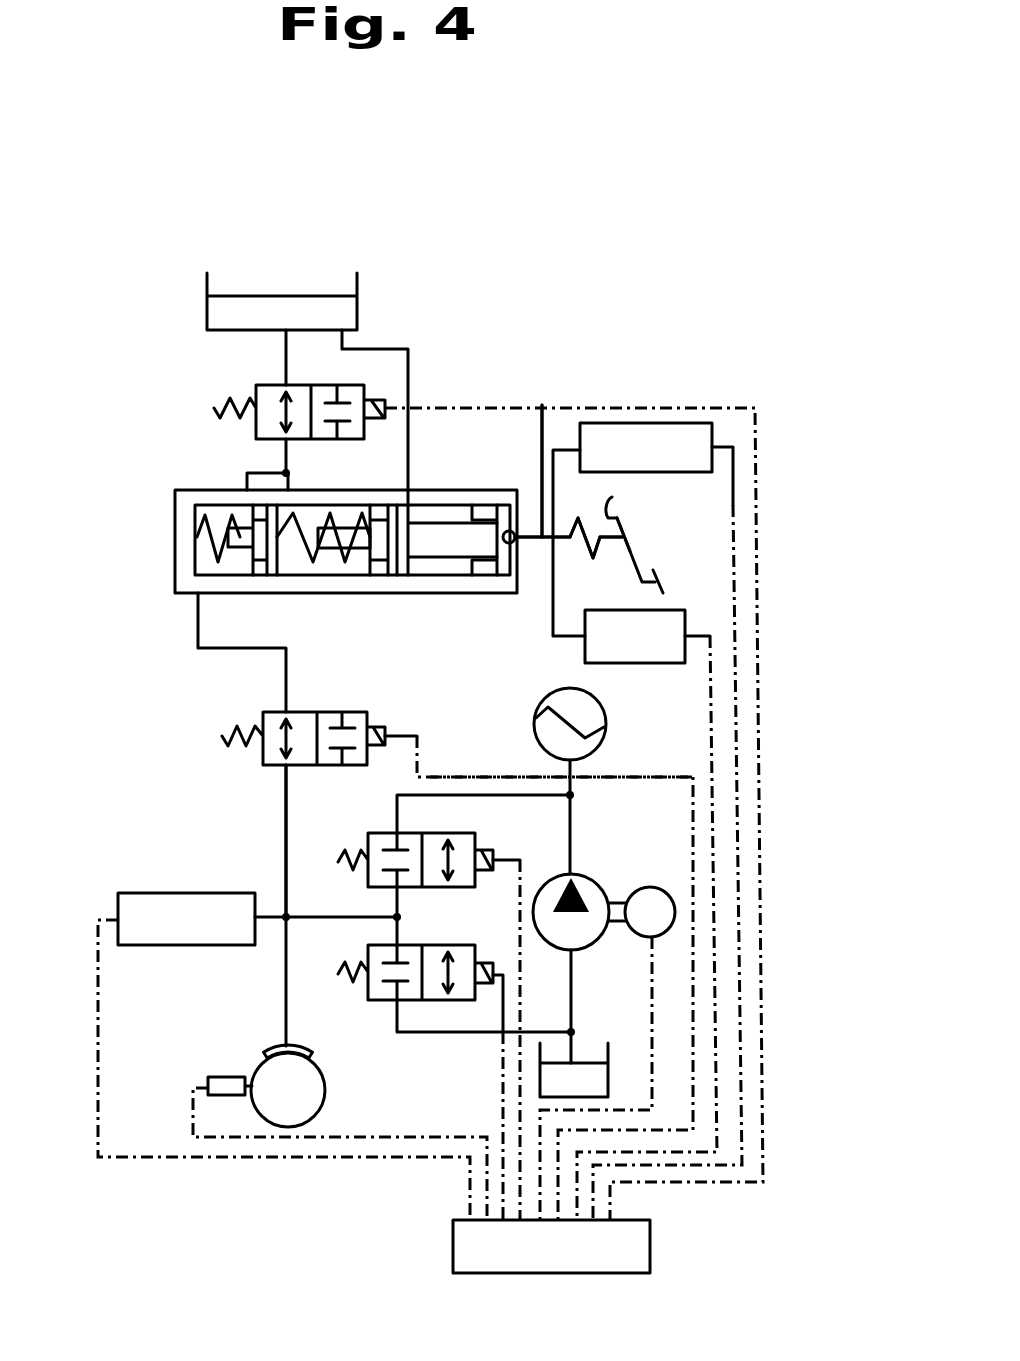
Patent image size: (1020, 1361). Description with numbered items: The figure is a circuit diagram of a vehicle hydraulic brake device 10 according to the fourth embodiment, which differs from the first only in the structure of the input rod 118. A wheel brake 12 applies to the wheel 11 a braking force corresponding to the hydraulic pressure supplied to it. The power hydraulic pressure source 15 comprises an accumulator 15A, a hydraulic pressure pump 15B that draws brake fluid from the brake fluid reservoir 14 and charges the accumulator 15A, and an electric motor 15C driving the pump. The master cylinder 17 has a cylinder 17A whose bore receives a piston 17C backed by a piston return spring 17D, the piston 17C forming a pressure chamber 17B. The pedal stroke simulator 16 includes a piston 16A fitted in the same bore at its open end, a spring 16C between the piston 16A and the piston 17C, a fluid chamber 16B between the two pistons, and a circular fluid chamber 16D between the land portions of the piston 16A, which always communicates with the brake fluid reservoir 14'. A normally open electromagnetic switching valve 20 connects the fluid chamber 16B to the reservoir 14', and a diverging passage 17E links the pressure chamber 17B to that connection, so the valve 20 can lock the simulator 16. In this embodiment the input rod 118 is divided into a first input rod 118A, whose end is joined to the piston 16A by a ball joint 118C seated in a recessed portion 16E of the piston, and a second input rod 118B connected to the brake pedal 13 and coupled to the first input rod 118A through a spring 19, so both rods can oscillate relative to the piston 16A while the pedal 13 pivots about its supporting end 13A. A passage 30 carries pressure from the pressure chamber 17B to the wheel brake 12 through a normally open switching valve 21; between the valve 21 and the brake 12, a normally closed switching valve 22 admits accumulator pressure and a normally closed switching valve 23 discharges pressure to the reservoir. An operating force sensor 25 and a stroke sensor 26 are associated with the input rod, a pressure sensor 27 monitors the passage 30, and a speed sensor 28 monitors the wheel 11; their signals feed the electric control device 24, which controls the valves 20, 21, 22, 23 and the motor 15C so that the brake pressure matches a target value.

The vehicle hydraulic brake device 10 is at (158, 453).
The wheel 11 is at (310, 1097).
The wheel brake 12 is at (278, 1047).
The brake pedal 13 is at (657, 576).
The supporting end 13A is at (620, 516).
The brake fluid reservoir 14 is at (690, 1076).
The brake fluid reservoir 14' is at (282, 262).
The power hydraulic pressure source 15 is at (602, 773).
The accumulator 15A is at (604, 708).
The hydraulic pressure pump 15B is at (605, 882).
The electric motor 15C is at (676, 910).
The pedal stroke simulator 16 is at (413, 595).
The piston 16A is at (447, 542).
The fluid chamber 16B is at (327, 552).
The spring 16C is at (352, 553).
The circular fluid chamber 16D is at (437, 506).
The recessed portion 16E is at (508, 531).
The master cylinder 17 is at (197, 482).
The cylinder 17A is at (183, 504).
The pressure chamber 17B is at (208, 557).
The piston 17C is at (275, 578).
The piston return spring 17D is at (212, 540).
The diverging passage 17E is at (248, 474).
The spring 19 is at (592, 530).
The electromagnetic switching valve 20 is at (267, 385).
The electromagnetic switching valve 21 is at (262, 713).
The electromagnetic switching valve 22 is at (473, 833).
The electromagnetic switching valve 23 is at (458, 912).
The electric control device 24 is at (630, 1250).
The operating force sensor 25 is at (713, 428).
The stroke sensor 26 is at (687, 623).
The pressure sensor 27 is at (155, 893).
The speed sensor 28 is at (208, 1078).
The passage 30 is at (283, 820).
The input rod 118 is at (580, 517).
The first input rod 118A is at (570, 518).
The second input rod 118B is at (612, 497).
The ball joint 118C is at (565, 527).